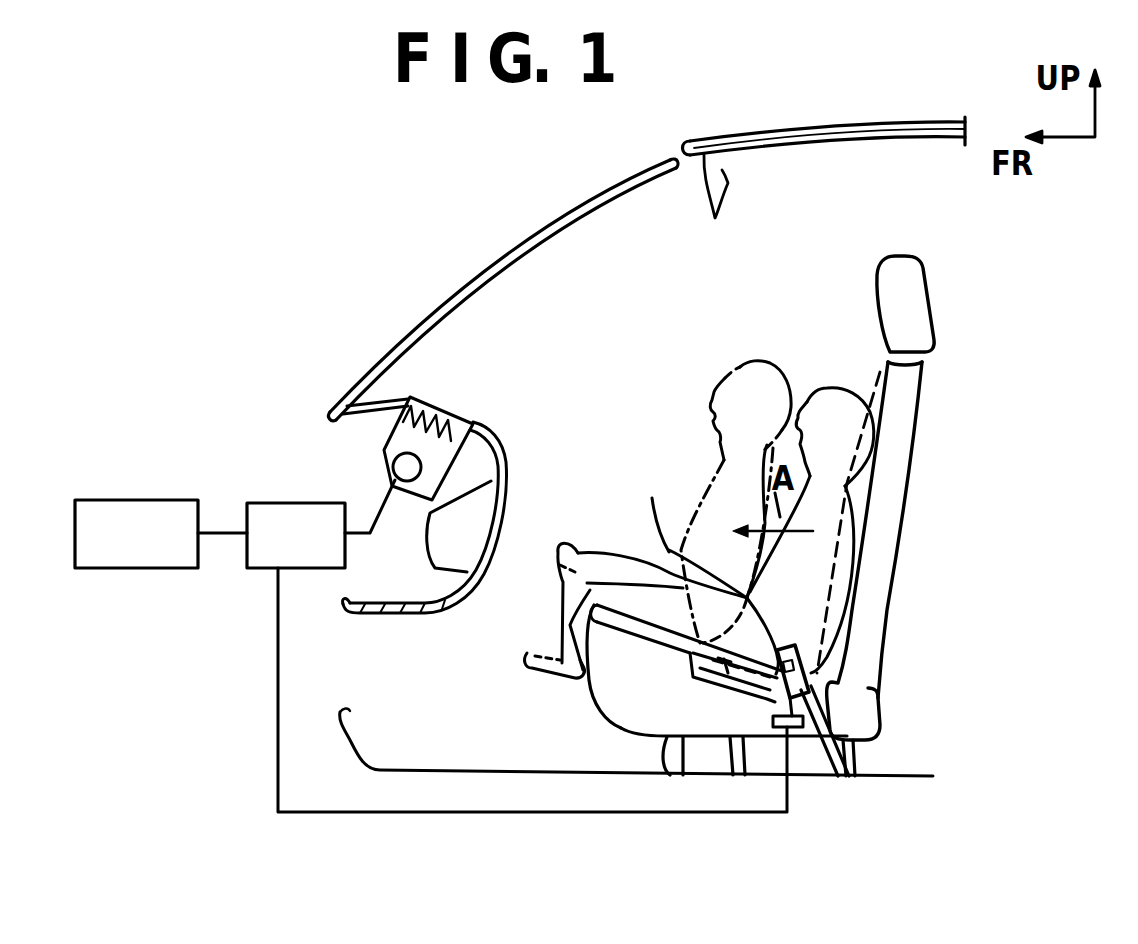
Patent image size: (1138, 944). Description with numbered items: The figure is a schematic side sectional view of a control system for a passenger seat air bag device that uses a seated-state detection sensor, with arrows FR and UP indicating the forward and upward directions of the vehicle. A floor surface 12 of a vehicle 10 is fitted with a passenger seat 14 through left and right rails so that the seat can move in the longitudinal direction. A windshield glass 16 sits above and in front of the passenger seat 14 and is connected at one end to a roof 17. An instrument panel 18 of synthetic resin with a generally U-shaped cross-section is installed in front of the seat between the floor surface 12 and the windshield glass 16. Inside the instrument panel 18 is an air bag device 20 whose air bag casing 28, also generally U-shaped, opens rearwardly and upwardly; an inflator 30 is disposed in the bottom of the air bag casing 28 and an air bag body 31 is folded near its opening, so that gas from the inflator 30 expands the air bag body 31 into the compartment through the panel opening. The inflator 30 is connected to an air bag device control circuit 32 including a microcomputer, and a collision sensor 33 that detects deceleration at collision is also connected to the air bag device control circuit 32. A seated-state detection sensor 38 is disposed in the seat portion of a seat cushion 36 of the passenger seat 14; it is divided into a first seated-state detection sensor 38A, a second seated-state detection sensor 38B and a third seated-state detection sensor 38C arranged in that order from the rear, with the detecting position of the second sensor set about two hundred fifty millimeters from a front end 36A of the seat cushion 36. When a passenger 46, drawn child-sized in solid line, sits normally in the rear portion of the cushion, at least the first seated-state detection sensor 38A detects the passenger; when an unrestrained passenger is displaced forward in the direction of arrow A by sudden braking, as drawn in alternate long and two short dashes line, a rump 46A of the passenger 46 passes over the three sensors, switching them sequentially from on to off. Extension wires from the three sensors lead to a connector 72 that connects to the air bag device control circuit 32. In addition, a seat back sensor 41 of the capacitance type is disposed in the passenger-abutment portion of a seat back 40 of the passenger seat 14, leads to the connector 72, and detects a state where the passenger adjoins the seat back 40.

The vehicle 10 is at (930, 122).
The floor surface 12 is at (442, 770).
The passenger seat 14 is at (751, 516).
The windshield glass 16 is at (582, 212).
The roof 17 is at (697, 149).
The instrument panel 18 is at (410, 455).
The air bag device 20 is at (410, 475).
The air bag casing 28 is at (455, 437).
The inflator 30 is at (410, 481).
The air bag body 31 is at (447, 412).
The air bag device control circuit 32 is at (253, 507).
The collision sensor 33 is at (104, 508).
The seat cushion 36 is at (683, 690).
The front end of the seat cushion 36A is at (605, 697).
The seated-state detection sensor 38 is at (710, 765).
The first seated-state detection sensor 38A is at (770, 676).
The second seated-state detection sensor 38B is at (727, 660).
The third seated-state detection sensor 38C is at (688, 655).
The seat back 40 is at (900, 523).
The seat back sensor 41 is at (873, 484).
The passenger 46 is at (828, 388).
The rump of the passenger 46A is at (636, 505).
The connector 72 is at (810, 768).